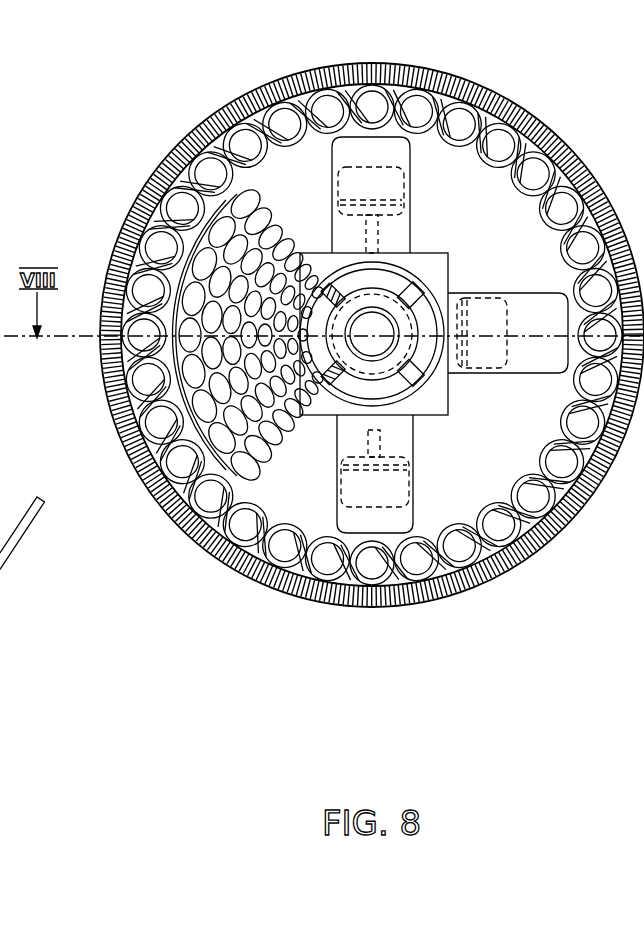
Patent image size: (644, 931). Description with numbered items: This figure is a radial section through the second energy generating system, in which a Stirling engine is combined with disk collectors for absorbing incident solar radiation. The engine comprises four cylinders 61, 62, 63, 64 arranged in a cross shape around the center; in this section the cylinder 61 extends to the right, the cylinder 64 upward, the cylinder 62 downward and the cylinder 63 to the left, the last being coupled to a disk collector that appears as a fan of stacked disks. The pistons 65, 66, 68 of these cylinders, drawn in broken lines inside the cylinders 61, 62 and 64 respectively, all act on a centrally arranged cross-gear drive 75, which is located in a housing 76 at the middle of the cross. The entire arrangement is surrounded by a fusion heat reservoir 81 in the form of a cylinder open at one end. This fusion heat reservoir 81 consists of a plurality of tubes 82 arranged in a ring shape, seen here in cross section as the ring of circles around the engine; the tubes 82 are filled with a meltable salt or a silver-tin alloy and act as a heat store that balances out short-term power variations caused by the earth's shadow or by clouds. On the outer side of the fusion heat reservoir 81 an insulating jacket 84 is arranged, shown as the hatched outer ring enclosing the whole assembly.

The cylinder 61 is at (508, 321).
The cylinder 62 is at (365, 542).
The cylinder 63 is at (205, 503).
The cylinder 64 is at (361, 134).
The piston 65 is at (488, 353).
The piston 66 is at (355, 487).
The piston 68 is at (355, 186).
The cross-gear drive 75 is at (435, 390).
The housing 76 is at (458, 467).
The fusion heat reservoir 81 is at (140, 176).
The tubes 82 is at (371, 333).
The insulating jacket 84 is at (225, 112).